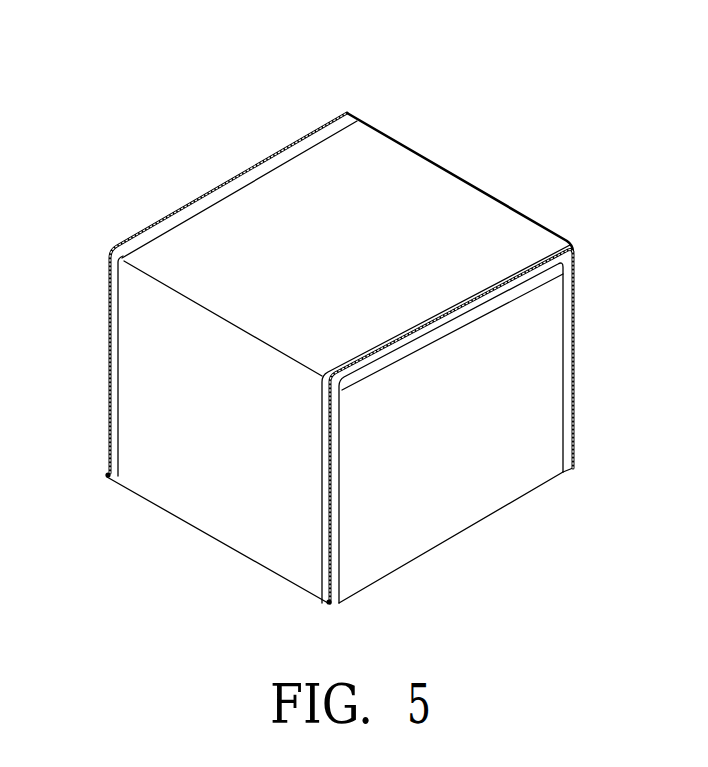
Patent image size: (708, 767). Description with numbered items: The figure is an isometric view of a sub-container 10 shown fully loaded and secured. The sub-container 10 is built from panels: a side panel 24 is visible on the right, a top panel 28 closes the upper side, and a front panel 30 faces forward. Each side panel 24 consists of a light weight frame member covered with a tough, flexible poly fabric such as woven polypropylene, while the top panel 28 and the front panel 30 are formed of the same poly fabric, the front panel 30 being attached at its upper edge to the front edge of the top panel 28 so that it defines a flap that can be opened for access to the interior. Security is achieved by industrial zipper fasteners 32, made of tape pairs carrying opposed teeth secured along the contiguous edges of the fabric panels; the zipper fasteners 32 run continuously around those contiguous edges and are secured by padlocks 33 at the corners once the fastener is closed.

The sub-container 10 is at (181, 90).
The side panel 24 is at (456, 422).
The top panel 28 is at (393, 212).
The front panel 30 is at (198, 422).
The zipper fastener 32 is at (159, 224).
The padlock 33 is at (105, 478).